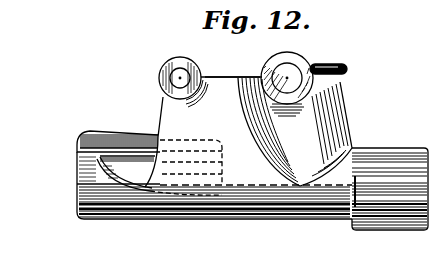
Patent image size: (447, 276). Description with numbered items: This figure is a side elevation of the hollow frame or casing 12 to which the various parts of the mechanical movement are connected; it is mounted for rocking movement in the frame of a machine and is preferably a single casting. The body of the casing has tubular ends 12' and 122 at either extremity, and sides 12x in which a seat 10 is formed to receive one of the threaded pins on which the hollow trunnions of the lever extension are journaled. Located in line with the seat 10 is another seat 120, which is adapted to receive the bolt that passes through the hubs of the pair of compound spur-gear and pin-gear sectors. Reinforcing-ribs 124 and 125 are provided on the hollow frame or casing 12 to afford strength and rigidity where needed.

The hollow frame or casing 12 is at (250, 142).
The sides of the frame 12x is at (232, 69).
The seat 120 is at (168, 64).
The seat 10 is at (309, 66).
The reinforcing-rib 125 is at (85, 132).
The tubular end 122 is at (78, 191).
The reinforcing-rib 124 is at (119, 185).
The tubular end 12' is at (390, 208).